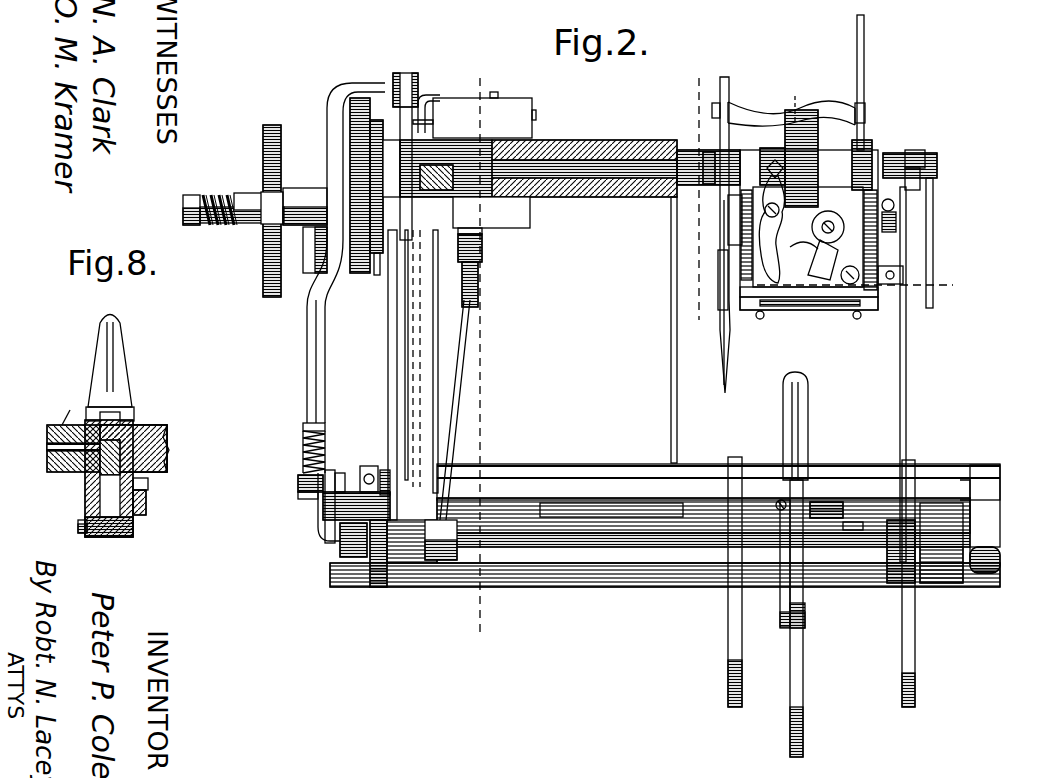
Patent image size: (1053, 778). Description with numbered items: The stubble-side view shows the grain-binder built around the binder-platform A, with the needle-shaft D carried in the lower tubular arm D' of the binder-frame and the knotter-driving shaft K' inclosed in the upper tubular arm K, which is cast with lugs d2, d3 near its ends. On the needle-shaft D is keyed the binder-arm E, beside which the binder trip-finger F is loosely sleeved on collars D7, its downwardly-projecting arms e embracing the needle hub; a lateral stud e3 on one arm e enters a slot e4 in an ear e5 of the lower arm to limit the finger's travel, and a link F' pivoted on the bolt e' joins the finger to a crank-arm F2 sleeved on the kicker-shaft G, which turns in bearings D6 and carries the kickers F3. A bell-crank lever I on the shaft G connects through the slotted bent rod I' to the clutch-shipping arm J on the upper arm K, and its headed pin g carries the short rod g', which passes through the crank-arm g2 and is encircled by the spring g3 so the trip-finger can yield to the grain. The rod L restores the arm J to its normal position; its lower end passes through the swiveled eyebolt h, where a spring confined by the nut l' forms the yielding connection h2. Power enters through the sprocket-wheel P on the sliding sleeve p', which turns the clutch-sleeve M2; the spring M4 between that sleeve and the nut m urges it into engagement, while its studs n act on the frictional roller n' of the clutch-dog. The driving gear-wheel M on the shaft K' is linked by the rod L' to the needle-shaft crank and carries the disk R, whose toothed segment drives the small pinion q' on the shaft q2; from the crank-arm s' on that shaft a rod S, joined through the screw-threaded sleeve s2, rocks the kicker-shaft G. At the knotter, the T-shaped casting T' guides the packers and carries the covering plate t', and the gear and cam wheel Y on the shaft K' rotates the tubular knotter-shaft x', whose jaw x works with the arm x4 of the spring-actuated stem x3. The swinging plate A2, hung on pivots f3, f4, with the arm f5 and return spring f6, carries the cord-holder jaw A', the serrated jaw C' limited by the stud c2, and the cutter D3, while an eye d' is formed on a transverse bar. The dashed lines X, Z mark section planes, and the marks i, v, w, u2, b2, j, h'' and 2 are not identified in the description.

In FIG. 2, the nut m is at (183, 212).
In FIG. 2, the clutch-sleeve M2 is at (240, 193).
In FIG. 2, the spring M4 is at (223, 224).
In FIG. 2, the sprocket-wheel P is at (263, 275).
In FIG. 2, the sliding sleeve p' is at (483, 340).
In FIG. 2, the small pinion q' is at (306, 262).
In FIG. 2, the toothed-segment disk R is at (330, 131).
In FIG. 2, the rod L is at (311, 331).
In FIG. 2, the rod L' is at (332, 361).
In FIG. 2, the clutch-shipping arm J is at (405, 145).
In FIG. 2, the driving-gear wheel M is at (360, 273).
In FIG. 2, the spring g3 is at (372, 275).
In FIG. 2, the slotted bent connecting-rod I' is at (379, 375).
In FIG. 2, the rod S is at (418, 242).
In FIG. 2, the rod i is at (440, 348).
In FIG. 2, the pinion shaft q2 is at (440, 242).
In FIG. 2, the upper tubular arm K is at (570, 368).
In FIG. 2, the knotter-driving shaft K' is at (584, 159).
In FIG. 2, the lug d3 is at (468, 203).
In FIG. 2, the crank-arm s' is at (493, 238).
In FIG. 2, the screw-threaded sleeve s2 is at (483, 275).
In FIG. 2, the section line Z is at (477, 347).
In FIG. 2, the gear and cam wheel Y is at (644, 367).
In FIG. 2, the frame bar v is at (671, 297).
In FIG. 2, the section line X is at (692, 198).
In FIG. 2, the pivot f3 is at (712, 150).
In FIG. 2, the swinging plate A2 is at (757, 312).
In FIG. 2, the T-shaped head or casting T' is at (783, 101).
In FIG. 2, the bracket u2 is at (826, 108).
In FIG. 2, the spring-actuated stem x3 is at (840, 160).
In FIG. 2, the knurled nut w is at (882, 146).
In FIG. 2, the pivot f4 is at (912, 150).
In FIG. 2, the knotter-shaft x' is at (918, 166).
In FIG. 2, the arm f5 is at (937, 186).
In FIG. 2, the spring f6 is at (930, 205).
In FIG. 2, the lug d2 is at (712, 226).
In FIG. 2, the cord-holder jaw A' is at (784, 230).
In FIG. 2, the stop or stud c2 is at (815, 234).
In FIG. 2, the radial jaw x is at (801, 254).
In FIG. 2, the jaw arm x4 is at (823, 278).
In FIG. 2, the bracket b2 is at (903, 278).
In FIG. 2, the knife or cutter D3 is at (864, 287).
In FIG. 2, the post j is at (712, 287).
In FIG. 2, the overhanging plate or covering t' is at (810, 318).
In FIG. 2, the serrated jaw C' is at (851, 266).
In FIG. 2, the binder-platform A is at (718, 492).
In FIG. 2, the kicker-shaft G is at (846, 545).
In FIG. 2, the stud or projection n is at (430, 533).
In FIG. 2, the frictional roller n' is at (397, 482).
In FIG. 2, the bell-crank lever I is at (363, 553).
In FIG. 2, the headed pin g is at (350, 534).
In FIG. 2, the crank-arm g2 is at (358, 478).
In FIG. 2, the short rod g' is at (357, 458).
In FIG. 2, the nut l' is at (320, 417).
In FIG. 2, the yielding connection h2 is at (305, 440).
In FIG. 2, the swiveled eyebolt h is at (301, 506).
In FIG. 2, the washer h'' is at (294, 501).
In FIG. 2, the binder trip-finger F is at (806, 426).
In FIG. 8, the binder trip-finger F is at (118, 361).
In FIG. 2, the binder-arm E is at (816, 498).
In FIG. 8, the binder-arm E is at (124, 412).
In FIG. 2, the bearings D6 is at (770, 494).
In FIG. 2, the needle-shaft D is at (836, 514).
In FIG. 8, the needle-shaft D is at (89, 448).
In FIG. 2, the pin 2 is at (843, 531).
In FIG. 2, the eye d' is at (995, 568).
In FIG. 2, the crank-arm F2 is at (777, 600).
In FIG. 2, the link F' is at (776, 582).
In FIG. 8, the link F' is at (109, 539).
In FIG. 2, the kickers F3 is at (742, 665).
In FIG. 8, the collars D7 is at (150, 420).
In FIG. 8, the lower tubular arm D' is at (151, 448).
In FIG. 8, the downwardly-projecting arm e is at (96, 478).
In FIG. 8, the ear or projection e5 is at (110, 496).
In FIG. 8, the lateral stud e3 is at (150, 485).
In FIG. 8, the slot e4 is at (147, 505).
In FIG. 8, the bolt e' is at (69, 523).